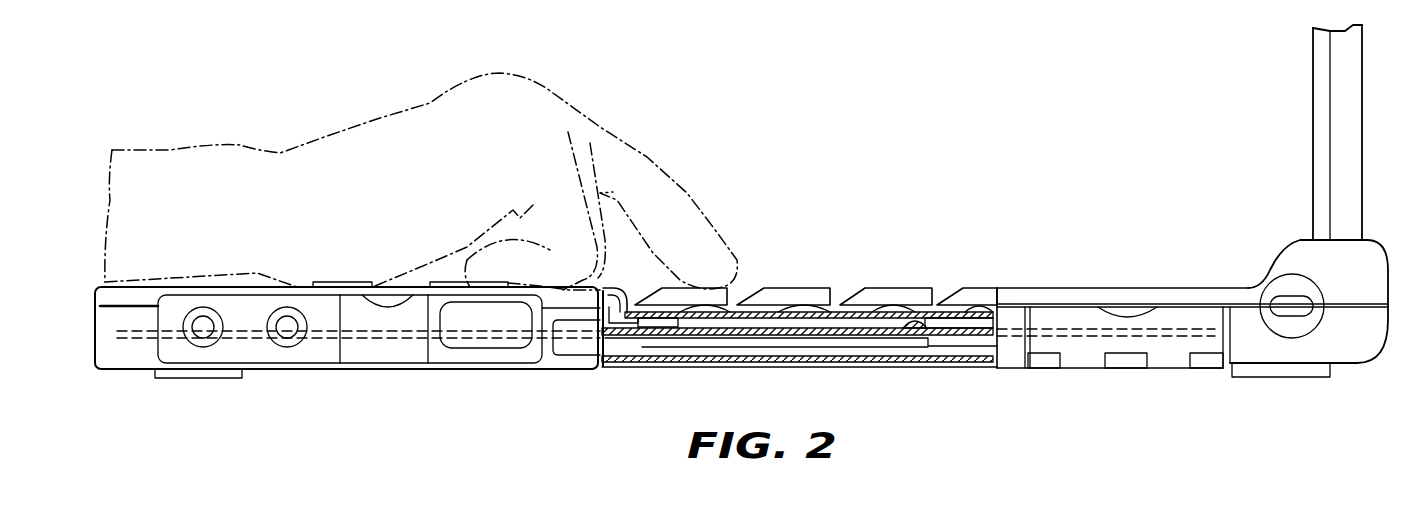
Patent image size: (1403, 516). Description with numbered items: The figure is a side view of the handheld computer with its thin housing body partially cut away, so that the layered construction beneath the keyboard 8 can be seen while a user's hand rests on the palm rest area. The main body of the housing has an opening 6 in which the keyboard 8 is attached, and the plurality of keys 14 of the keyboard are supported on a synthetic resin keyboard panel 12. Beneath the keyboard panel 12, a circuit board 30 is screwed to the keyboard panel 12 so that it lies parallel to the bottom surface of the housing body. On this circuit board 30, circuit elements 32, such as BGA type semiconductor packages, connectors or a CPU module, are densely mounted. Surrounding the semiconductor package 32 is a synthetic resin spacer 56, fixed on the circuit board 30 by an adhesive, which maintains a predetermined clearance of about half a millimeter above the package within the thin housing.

The opening 6 is at (622, 290).
The keyboard 8 is at (840, 290).
The keyboard panel 12 is at (931, 320).
The keys 14 is at (788, 295).
The circuit board 30 is at (893, 338).
The circuit elements 32 is at (832, 335).
The spacer 56 is at (682, 327).